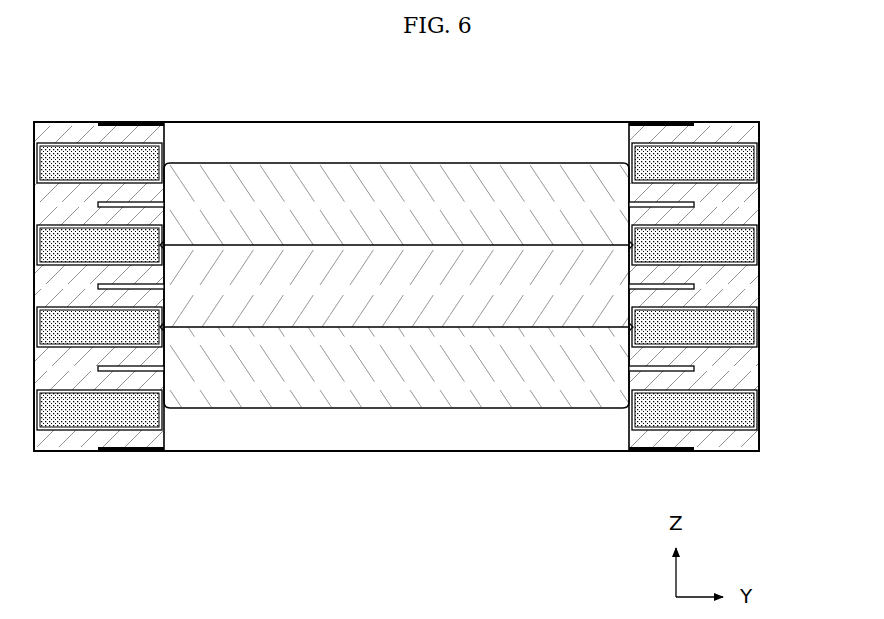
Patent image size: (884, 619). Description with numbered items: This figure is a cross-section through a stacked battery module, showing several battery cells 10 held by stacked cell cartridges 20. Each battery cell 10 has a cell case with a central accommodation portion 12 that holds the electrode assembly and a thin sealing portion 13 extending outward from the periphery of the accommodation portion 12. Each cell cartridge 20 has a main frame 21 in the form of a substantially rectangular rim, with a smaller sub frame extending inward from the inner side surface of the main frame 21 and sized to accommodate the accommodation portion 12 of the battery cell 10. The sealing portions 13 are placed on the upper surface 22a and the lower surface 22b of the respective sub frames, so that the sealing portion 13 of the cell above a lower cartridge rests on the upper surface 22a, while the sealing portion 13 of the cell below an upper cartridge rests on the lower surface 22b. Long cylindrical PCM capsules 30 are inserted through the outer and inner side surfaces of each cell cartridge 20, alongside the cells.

The battery cell 10 is at (392, 148).
The accommodation portion 12 is at (450, 163).
The sealing portion 13 is at (673, 203).
The cell cartridge 20 is at (778, 145).
The main frame 21 is at (733, 122).
The upper surface of the sub frame 22a is at (660, 122).
The lower surface of the sub frame 22b is at (693, 287).
The PCM capsule 30 is at (85, 160).